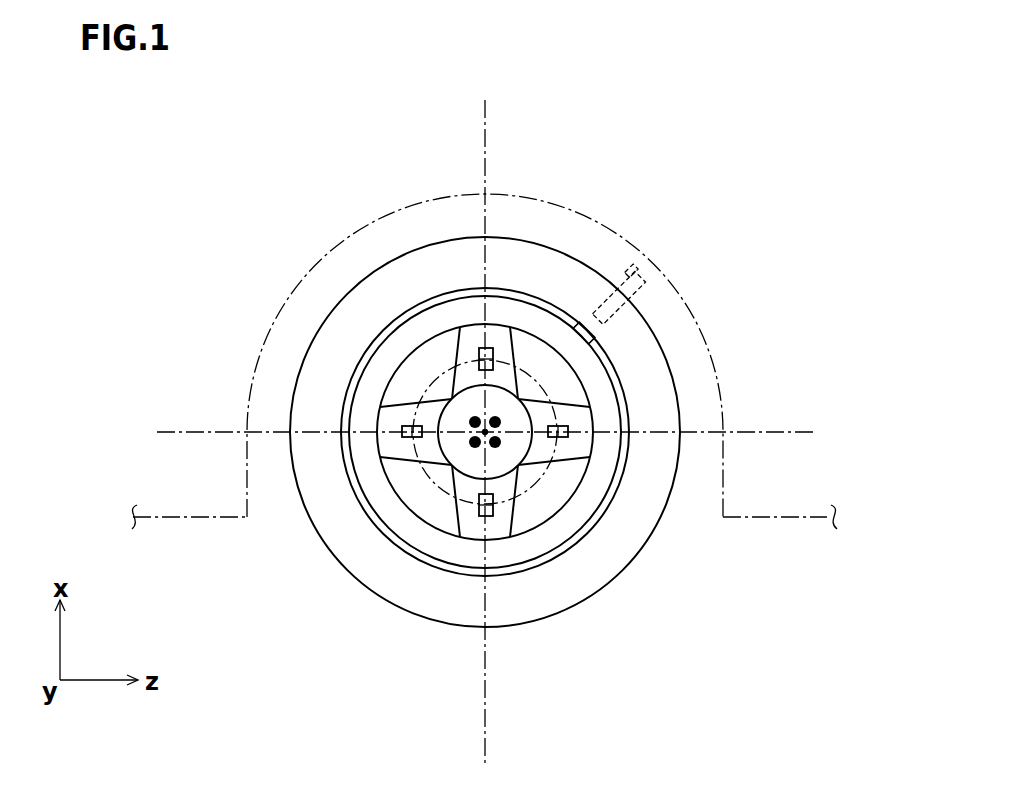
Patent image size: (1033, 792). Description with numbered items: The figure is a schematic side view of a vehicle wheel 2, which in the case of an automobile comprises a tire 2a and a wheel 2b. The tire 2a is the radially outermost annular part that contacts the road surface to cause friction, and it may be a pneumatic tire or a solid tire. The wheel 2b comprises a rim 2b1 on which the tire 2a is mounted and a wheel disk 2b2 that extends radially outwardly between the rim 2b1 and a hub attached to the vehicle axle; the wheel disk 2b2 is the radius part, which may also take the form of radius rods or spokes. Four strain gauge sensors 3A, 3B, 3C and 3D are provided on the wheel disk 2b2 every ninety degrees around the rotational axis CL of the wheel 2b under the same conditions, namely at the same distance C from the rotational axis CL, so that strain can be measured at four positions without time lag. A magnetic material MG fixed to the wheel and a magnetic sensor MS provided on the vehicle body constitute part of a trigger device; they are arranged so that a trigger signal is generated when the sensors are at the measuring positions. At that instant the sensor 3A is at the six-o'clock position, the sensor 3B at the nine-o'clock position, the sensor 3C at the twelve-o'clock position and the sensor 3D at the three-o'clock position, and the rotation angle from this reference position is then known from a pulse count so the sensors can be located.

The vehicle wheel 2 is at (213, 613).
The tire 2a is at (342, 545).
The wheel 2b is at (408, 518).
The rim 2b1 is at (587, 530).
The wheel disk 2b2 is at (543, 523).
The strain gauge sensor 3A is at (493, 508).
The strain gauge sensor 3B is at (403, 425).
The strain gauge sensor 3C is at (487, 348).
The strain gauge sensor 3D is at (568, 427).
The distance from the rotational axis C is at (443, 373).
The rotational axis CL is at (485, 432).
The magnetic material MG is at (583, 332).
The magnetic sensor MS is at (625, 272).